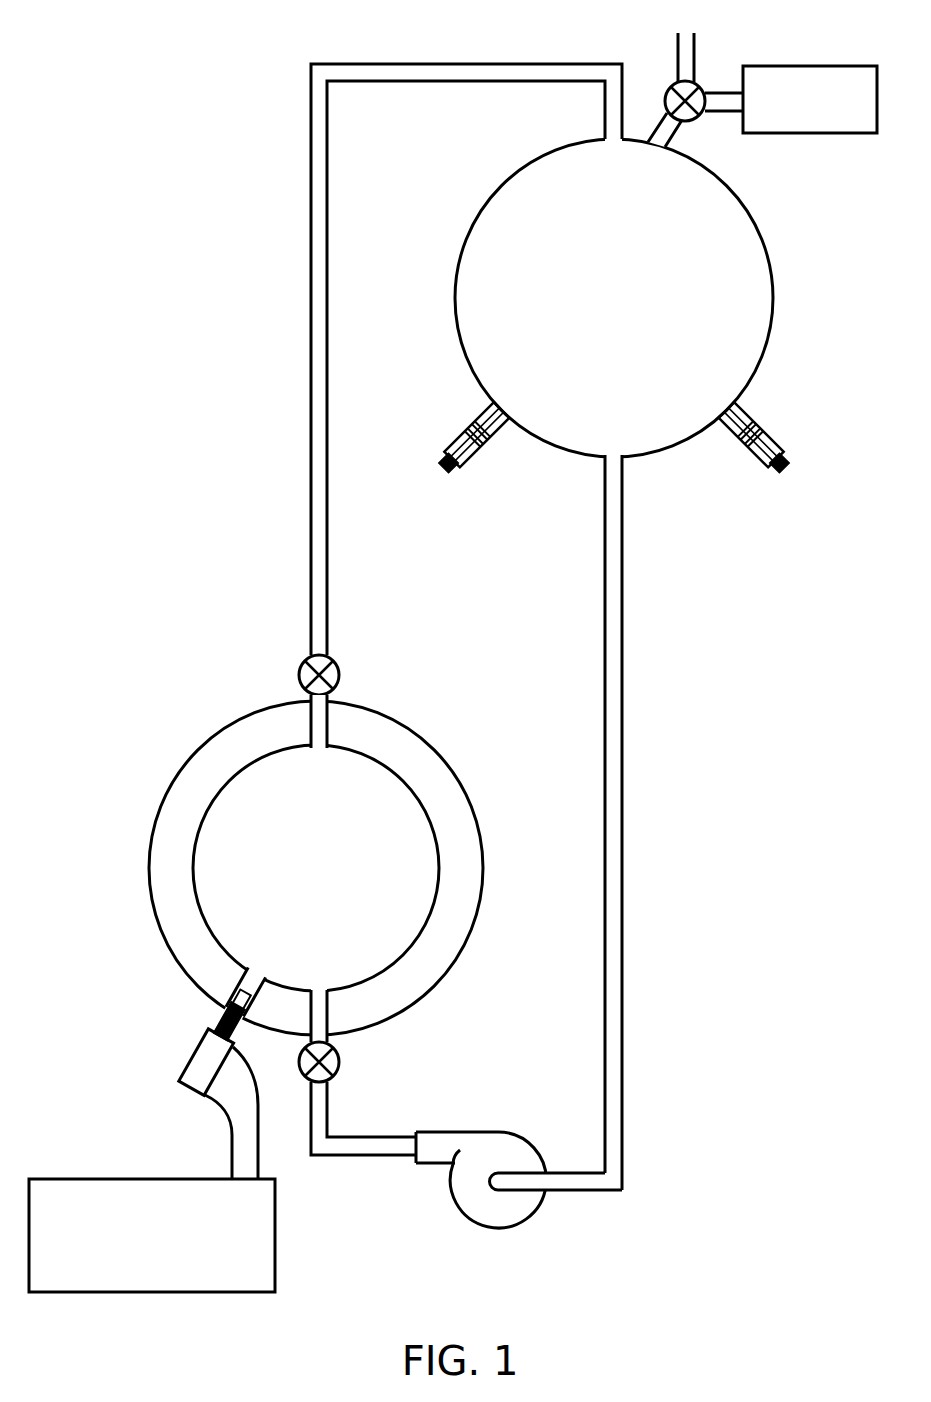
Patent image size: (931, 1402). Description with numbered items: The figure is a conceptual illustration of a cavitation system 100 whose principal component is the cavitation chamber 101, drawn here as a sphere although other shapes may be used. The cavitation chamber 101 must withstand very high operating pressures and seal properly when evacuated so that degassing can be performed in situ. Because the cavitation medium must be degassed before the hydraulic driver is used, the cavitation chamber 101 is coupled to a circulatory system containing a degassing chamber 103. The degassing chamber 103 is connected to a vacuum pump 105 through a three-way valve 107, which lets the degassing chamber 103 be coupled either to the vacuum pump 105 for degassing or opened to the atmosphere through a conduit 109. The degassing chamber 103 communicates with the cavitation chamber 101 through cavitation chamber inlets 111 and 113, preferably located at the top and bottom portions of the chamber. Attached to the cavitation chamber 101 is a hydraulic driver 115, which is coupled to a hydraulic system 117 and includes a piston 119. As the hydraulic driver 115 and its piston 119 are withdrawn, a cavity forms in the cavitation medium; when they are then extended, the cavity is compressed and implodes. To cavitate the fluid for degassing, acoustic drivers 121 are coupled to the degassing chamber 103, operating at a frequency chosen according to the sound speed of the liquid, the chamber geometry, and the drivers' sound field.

The system 100 is at (114, 575).
The cavitation chamber 101 is at (138, 867).
The degassing chamber 103 is at (786, 287).
The vacuum pump 105 is at (788, 66).
The three-way valve 107 is at (700, 122).
The conduit 109 is at (677, 50).
The cavitation chamber inlet 111 is at (330, 723).
The cavitation chamber inlet 113 is at (330, 1002).
The hydraulic driver 115 is at (188, 1055).
The hydraulic system 117 is at (275, 1235).
The piston 119 is at (233, 1001).
The acoustic driver 121 is at (472, 450).